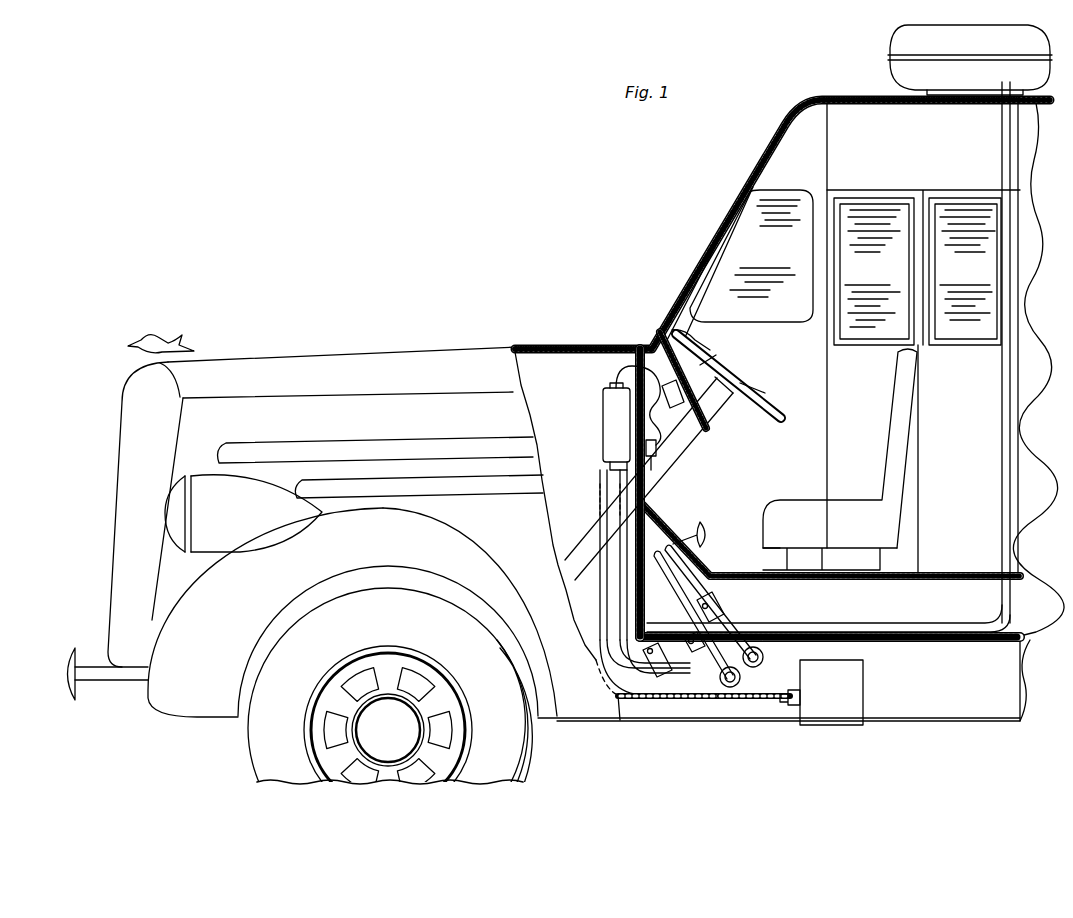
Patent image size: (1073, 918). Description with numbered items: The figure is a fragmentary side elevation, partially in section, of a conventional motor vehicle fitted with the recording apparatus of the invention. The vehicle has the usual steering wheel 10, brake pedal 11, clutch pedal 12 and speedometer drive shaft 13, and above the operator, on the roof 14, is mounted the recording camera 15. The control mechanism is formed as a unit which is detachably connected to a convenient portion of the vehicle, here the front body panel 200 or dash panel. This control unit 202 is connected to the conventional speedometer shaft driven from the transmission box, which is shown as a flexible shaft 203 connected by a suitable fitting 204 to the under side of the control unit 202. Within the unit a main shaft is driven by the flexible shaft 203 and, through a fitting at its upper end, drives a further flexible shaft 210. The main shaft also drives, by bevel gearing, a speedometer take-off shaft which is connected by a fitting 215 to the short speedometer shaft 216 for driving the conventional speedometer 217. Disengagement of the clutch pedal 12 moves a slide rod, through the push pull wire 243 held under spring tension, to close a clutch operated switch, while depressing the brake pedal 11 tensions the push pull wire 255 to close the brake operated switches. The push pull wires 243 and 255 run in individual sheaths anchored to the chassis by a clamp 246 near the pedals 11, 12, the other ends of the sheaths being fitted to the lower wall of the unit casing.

The steering wheel 10 is at (770, 395).
The brake pedal 11 is at (723, 620).
The clutch pedal 12 is at (696, 619).
The speedometer drive shaft 13 is at (740, 703).
The roof 14 is at (873, 104).
The recording camera 15 is at (898, 47).
The front body panel 200 is at (646, 501).
The control unit 202 is at (605, 415).
The flexible shaft 203 is at (680, 703).
The fitting 204 is at (610, 468).
The flexible shaft 210 is at (830, 630).
The fitting 215 is at (657, 450).
The short speedometer shaft 216 is at (667, 427).
The speedometer 217 is at (684, 392).
The push pull wire 243 is at (696, 650).
The clamp 246 is at (664, 669).
The push pull wire 255 is at (690, 647).